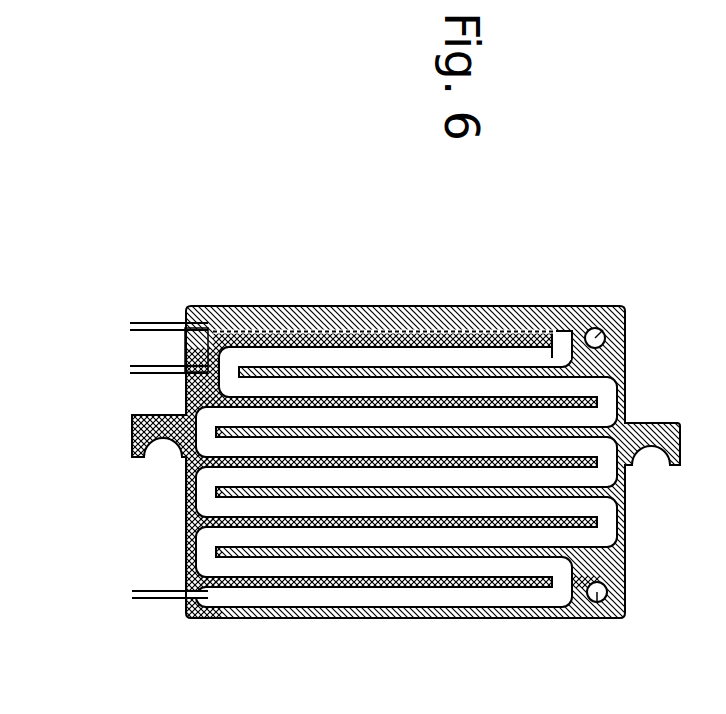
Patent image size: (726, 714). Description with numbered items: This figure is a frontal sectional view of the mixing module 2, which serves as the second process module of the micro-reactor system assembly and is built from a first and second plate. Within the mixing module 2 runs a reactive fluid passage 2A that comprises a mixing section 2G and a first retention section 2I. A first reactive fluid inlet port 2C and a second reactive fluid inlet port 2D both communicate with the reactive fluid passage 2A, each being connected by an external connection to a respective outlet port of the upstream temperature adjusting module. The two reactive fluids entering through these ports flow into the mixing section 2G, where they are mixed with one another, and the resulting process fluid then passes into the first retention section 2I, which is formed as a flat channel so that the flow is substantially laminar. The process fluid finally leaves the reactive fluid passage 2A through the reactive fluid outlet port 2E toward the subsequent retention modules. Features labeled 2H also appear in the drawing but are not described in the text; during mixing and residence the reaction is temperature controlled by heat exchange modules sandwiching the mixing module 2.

The mixing module 2 is at (462, 308).
The reactive fluid passage 2A is at (306, 353).
The first reactive fluid inlet port 2C is at (130, 330).
The second reactive fluid inlet port 2D is at (130, 371).
The reactive fluid outlet port 2E is at (132, 598).
The mixing section 2G is at (538, 330).
The mounting hole 2H is at (610, 312).
The first retention section 2I is at (207, 482).